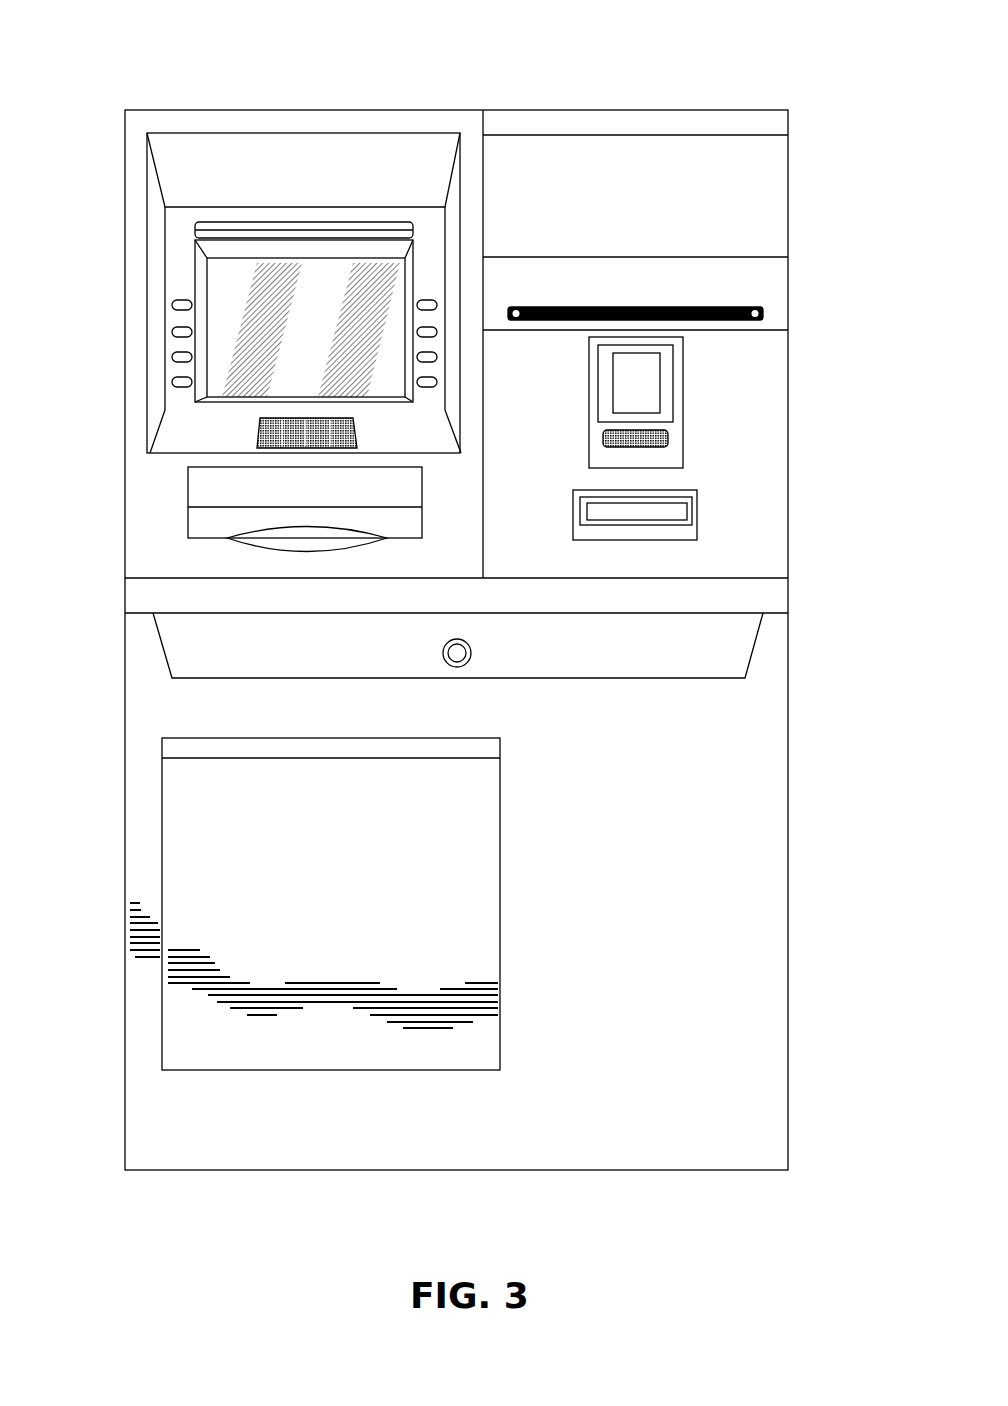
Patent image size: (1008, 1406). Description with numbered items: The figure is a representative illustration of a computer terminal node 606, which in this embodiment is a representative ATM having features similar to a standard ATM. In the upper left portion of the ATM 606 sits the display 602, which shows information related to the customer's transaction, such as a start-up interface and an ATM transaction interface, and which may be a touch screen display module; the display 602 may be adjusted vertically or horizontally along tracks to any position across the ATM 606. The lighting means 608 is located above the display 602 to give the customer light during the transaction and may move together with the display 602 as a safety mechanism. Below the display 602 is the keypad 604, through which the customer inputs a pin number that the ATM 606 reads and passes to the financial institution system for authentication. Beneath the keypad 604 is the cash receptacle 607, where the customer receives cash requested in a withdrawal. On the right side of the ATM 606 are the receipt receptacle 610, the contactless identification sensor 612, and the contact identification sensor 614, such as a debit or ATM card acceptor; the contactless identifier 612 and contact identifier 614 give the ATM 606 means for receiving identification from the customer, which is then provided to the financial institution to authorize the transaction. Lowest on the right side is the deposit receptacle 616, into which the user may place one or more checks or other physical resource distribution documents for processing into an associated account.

The computer terminal node 606 is at (753, 63).
The lighting means 608 is at (290, 165).
The display 602 is at (236, 288).
The keypad 604 is at (258, 445).
The cash receptacle 607 is at (187, 506).
The receipt receptacle 610 is at (767, 312).
The contactless identification sensor 612 is at (677, 380).
The contact identification sensor 614 is at (669, 438).
The deposit receptacle 616 is at (692, 513).